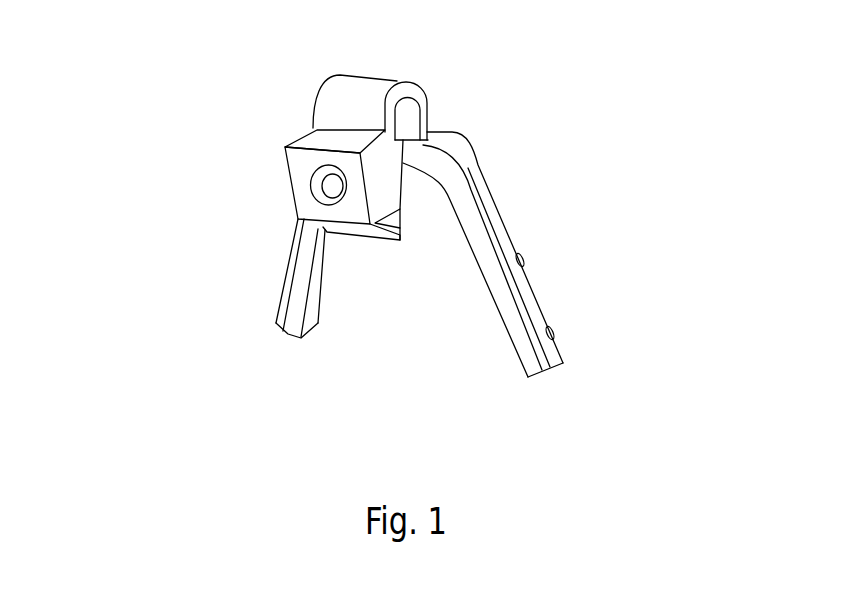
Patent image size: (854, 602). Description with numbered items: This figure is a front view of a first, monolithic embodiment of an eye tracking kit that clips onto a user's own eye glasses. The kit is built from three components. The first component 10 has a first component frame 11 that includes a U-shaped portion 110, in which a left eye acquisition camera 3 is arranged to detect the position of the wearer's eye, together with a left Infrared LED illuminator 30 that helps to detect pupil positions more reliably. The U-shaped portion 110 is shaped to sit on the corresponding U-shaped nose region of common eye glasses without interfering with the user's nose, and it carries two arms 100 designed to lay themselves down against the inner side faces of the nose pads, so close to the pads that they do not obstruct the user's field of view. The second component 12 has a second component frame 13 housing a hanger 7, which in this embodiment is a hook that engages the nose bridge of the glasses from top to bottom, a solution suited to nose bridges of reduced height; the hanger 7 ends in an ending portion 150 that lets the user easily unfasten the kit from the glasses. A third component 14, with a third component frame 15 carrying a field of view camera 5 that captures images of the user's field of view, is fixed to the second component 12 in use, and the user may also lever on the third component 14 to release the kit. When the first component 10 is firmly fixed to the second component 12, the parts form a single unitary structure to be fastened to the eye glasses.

The left eye acquisition camera 3 is at (530, 262).
The field of view camera 5 is at (333, 185).
The hanger 7 is at (397, 81).
The first component 10 is at (305, 305).
The first component frame 11 is at (307, 262).
The second component 12 is at (455, 107).
The second component frame 13 is at (410, 92).
The third component 14 is at (260, 156).
The third component frame 15 is at (318, 133).
The left Infrared LED illuminator 30 is at (557, 338).
The arms 100 is at (530, 362).
The U-shaped portion 110 is at (308, 300).
The ending portion 150 is at (352, 237).